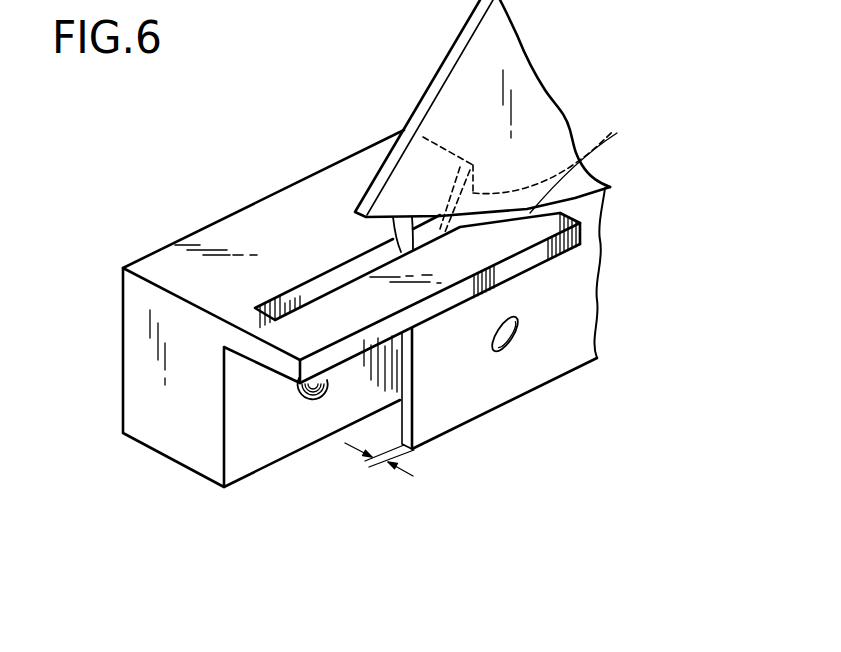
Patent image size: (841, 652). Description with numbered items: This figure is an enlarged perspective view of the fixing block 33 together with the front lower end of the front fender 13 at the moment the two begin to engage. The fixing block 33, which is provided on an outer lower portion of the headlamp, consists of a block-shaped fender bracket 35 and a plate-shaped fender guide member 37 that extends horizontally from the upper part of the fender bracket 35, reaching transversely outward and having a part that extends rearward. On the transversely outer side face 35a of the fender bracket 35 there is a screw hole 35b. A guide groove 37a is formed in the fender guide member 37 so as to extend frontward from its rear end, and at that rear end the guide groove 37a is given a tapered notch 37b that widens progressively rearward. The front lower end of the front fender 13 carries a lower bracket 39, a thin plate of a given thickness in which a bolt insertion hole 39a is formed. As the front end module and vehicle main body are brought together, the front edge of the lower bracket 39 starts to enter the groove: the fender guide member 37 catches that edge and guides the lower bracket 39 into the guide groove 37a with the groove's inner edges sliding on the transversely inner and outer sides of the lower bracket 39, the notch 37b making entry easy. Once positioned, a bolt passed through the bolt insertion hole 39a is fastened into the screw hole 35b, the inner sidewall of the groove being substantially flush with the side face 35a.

The front fender 13 is at (477, 77).
The fixing block 33 is at (355, 342).
The fender bracket 35 is at (263, 347).
The side face 35a is at (255, 440).
The screw hole 35b is at (323, 393).
The fender guide member 37 is at (417, 286).
The guide groove 37a is at (310, 295).
The tapered notch 37b is at (613, 133).
The lower bracket 39 is at (516, 358).
The bolt insertion hole 39a is at (520, 337).